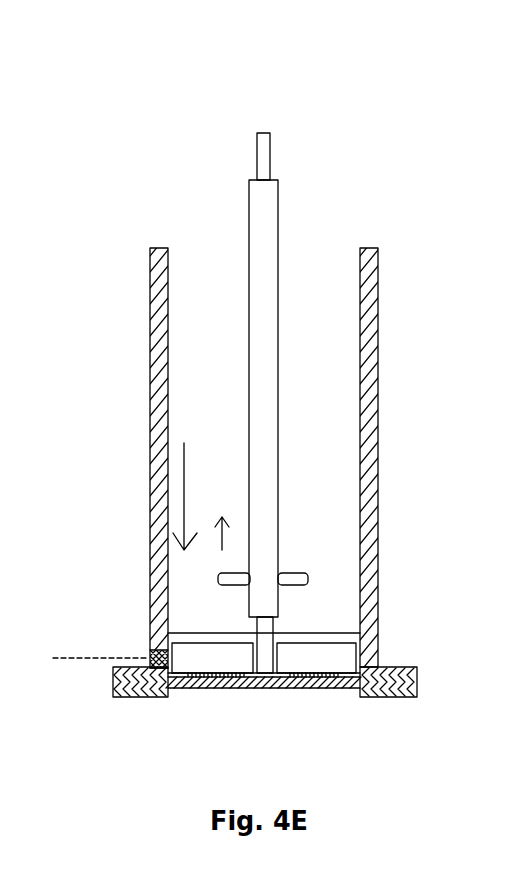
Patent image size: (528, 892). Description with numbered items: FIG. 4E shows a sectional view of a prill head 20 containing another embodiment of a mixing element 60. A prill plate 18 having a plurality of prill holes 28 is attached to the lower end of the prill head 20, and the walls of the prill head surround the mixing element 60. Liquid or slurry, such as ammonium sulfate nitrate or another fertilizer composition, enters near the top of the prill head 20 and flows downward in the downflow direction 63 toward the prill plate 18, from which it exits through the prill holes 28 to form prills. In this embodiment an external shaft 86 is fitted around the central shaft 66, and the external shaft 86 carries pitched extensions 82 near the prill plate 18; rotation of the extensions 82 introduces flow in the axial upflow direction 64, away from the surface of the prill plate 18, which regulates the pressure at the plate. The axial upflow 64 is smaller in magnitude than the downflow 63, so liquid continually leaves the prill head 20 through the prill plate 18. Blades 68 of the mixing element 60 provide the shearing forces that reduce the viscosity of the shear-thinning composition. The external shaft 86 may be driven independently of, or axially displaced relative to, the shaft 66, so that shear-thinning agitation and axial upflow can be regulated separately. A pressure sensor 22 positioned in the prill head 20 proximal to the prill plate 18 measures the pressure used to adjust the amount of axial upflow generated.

The mixing element 60 is at (197, 147).
The shaft 66 is at (268, 157).
The external shaft 86 is at (252, 235).
The prill head 20 is at (390, 360).
The downflow direction 63 is at (185, 505).
The axial upflow direction 64 is at (224, 533).
The pitched extensions 82 is at (310, 582).
The pressure sensor 22 is at (148, 655).
The blades 68 is at (345, 658).
The prill plate 18 is at (203, 688).
The prill holes 28 is at (335, 688).